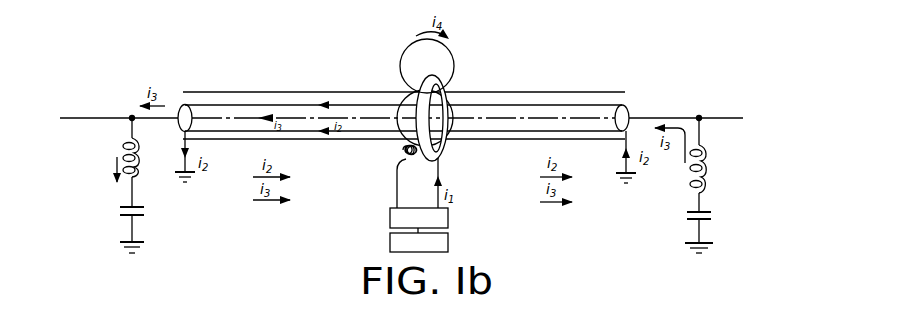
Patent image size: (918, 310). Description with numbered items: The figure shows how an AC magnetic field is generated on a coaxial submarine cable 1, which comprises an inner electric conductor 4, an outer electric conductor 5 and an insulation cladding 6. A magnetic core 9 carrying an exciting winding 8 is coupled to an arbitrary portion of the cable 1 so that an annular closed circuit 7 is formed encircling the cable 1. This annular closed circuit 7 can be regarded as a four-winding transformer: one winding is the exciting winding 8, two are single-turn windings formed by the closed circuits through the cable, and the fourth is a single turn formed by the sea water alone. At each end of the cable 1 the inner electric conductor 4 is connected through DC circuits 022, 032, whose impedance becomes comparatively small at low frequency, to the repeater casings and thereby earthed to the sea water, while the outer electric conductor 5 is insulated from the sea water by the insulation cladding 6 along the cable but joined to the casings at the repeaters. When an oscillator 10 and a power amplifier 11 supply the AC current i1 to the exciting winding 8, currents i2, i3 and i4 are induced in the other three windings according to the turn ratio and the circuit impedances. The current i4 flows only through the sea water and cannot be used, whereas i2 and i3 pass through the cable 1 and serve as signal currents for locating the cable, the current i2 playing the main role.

The cable 1 is at (473, 88).
The inner electric conductor 4 is at (571, 119).
The outer electric conductor 5 is at (349, 102).
The insulation cladding 6 is at (517, 95).
The annular closed circuit 7 is at (436, 76).
The exciting winding 8 is at (409, 161).
The magnetic core 9 is at (446, 146).
The oscillator 10 is at (449, 240).
The power amplifier 11 is at (449, 213).
The DC circuit 022 is at (143, 140).
The DC circuit 032 is at (713, 145).